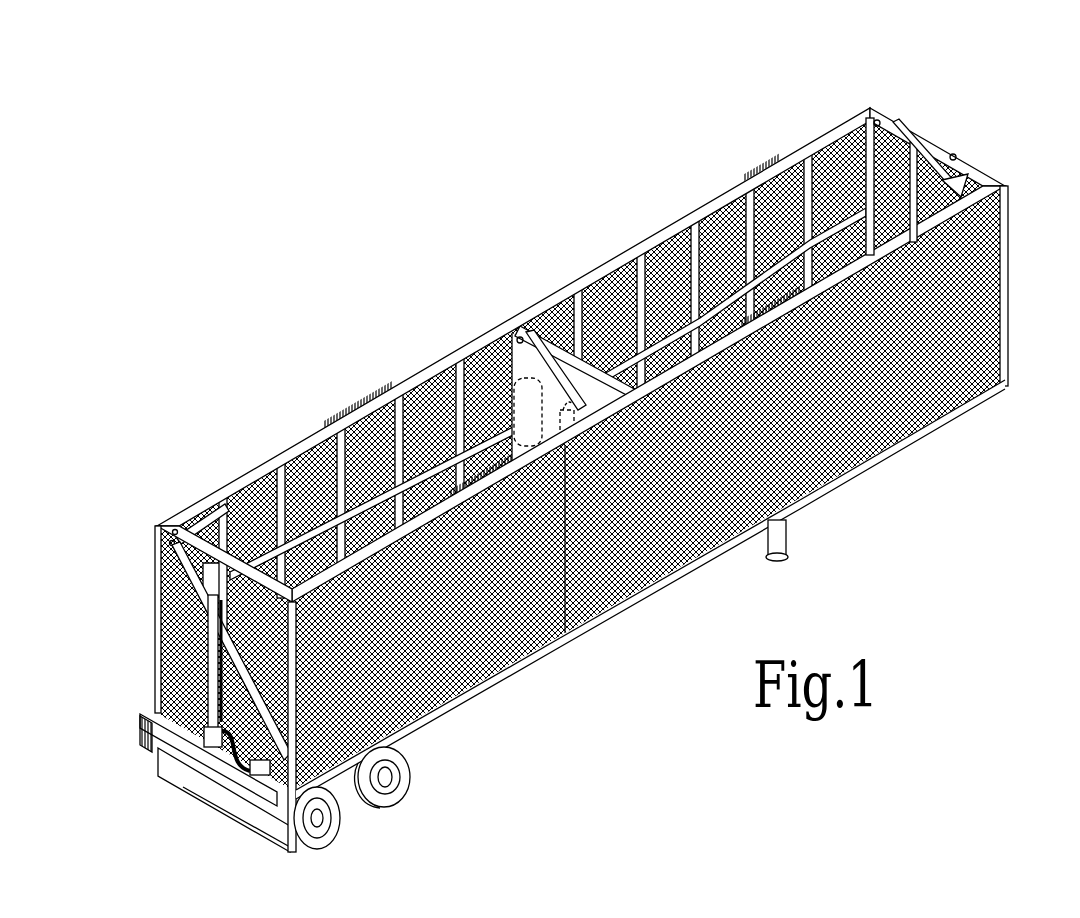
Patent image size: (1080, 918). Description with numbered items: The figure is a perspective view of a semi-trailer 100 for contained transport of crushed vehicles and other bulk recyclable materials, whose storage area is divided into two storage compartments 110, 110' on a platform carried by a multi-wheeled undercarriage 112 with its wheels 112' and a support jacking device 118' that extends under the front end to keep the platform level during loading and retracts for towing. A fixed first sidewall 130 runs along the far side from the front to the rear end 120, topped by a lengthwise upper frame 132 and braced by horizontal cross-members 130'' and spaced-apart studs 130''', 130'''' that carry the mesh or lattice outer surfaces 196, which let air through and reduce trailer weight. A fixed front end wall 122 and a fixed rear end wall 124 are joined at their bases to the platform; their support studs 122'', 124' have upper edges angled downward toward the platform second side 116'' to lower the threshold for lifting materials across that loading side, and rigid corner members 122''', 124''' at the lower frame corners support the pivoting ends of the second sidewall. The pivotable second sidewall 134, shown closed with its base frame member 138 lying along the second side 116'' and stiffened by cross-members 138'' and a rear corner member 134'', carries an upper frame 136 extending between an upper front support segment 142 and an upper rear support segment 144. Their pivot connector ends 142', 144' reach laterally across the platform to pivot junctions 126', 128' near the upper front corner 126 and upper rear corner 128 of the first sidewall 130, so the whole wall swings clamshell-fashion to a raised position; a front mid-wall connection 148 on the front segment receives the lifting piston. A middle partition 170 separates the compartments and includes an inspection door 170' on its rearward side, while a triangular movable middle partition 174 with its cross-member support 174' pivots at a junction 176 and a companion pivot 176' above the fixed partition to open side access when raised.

The semi-trailer 100 is at (690, 130).
The storage compartment 110 is at (768, 217).
The storage compartment 110' is at (403, 418).
The multi-wheeled undercarriage 112 is at (387, 832).
The wheels 112' is at (412, 784).
The second side 116'' is at (445, 718).
The support jacking device 118' is at (818, 543).
The rear end 120 is at (267, 803).
The front end wall 122 is at (901, 166).
The front end wall support stud 122'' is at (968, 175).
The wall front corner member 122''' is at (831, 184).
The rear end wall 124 is at (160, 665).
The rear end wall support stud 124' is at (187, 774).
The rear corner member 124''' is at (182, 658).
The upper front corner 126 is at (921, 116).
The front pivot junction 126' is at (902, 90).
The upper rear corner 128 is at (174, 545).
The rear pivot junction 128' is at (130, 616).
The first sidewall 130 is at (571, 355).
The horizontal cross-member 130'' is at (366, 460).
The spaced-apart stud 130''' is at (271, 495).
The spaced-apart stud 130'''' is at (648, 488).
The upper frame 132 is at (517, 328).
The second sidewall 134 is at (686, 394).
The rear corner member 134'' is at (343, 840).
The upper frame 136 is at (1008, 232).
The base frame member 138 is at (680, 573).
The horizontal cross-member 138'' is at (902, 444).
The upper front support segment 142 is at (1009, 179).
The pivot connector end 142' is at (942, 133).
The upper rear support segment 144 is at (214, 539).
The pivot connector end 144' is at (191, 651).
The front mid-wall connection 148 is at (953, 157).
The middle partition 170 is at (569, 366).
The inspection door 170' is at (448, 405).
The movable middle partition 174 is at (576, 321).
The cross-member support 174' is at (576, 318).
The pivot junction 176 is at (595, 289).
The gate pivot post 176' is at (568, 298).
The outer surfaces 196 is at (560, 637).